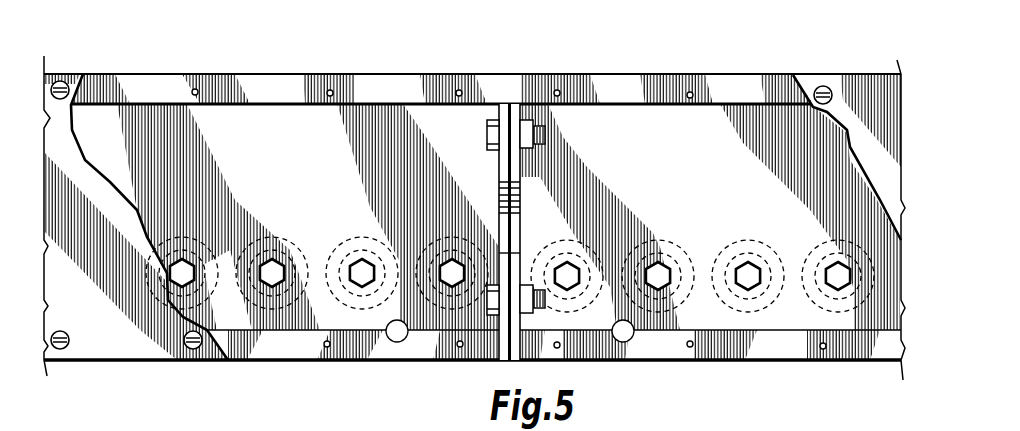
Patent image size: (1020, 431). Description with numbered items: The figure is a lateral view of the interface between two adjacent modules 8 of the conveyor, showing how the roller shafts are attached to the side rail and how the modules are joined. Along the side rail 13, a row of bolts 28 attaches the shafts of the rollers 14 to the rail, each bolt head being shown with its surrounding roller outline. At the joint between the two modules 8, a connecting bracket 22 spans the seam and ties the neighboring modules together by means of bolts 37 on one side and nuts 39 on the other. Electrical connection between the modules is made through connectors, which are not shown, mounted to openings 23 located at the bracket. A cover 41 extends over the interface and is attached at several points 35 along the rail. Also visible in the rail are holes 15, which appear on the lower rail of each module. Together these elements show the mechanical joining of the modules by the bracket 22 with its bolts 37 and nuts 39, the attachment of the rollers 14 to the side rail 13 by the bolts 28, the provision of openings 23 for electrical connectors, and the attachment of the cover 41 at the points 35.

The module 8 is at (377, 66).
The side rail 13 is at (707, 78).
The roller 14 is at (283, 237).
The hole 15 is at (406, 339).
The connecting bracket 22 is at (498, 162).
The opening 23 is at (498, 197).
The bolt 28 is at (367, 262).
The attachment point 35 is at (823, 85).
The bolt 37 is at (487, 137).
The nut 39 is at (527, 155).
The cover 41 is at (87, 160).